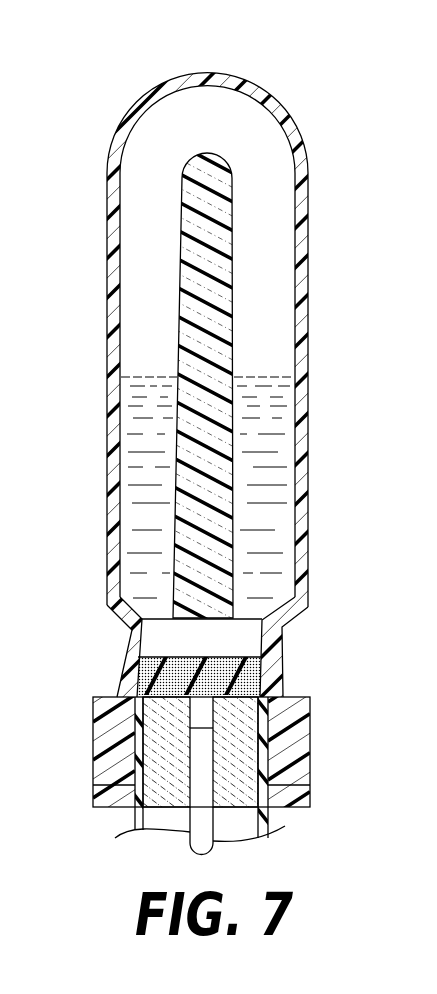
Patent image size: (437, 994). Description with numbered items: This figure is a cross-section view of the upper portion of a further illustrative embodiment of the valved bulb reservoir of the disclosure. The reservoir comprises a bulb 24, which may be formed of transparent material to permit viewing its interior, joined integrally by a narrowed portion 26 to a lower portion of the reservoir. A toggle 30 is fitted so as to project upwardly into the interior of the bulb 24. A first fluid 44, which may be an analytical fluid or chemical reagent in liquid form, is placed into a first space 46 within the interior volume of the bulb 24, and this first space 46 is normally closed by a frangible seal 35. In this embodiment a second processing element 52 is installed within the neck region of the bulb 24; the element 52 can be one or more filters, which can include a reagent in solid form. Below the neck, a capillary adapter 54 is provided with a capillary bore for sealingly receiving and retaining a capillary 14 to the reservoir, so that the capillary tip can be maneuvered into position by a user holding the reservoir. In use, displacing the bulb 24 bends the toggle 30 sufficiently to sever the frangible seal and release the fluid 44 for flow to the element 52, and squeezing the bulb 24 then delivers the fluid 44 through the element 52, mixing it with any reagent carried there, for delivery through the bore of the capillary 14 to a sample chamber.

The capillary 14 is at (207, 842).
The bulb 24 is at (300, 212).
The narrowed portion 26 is at (273, 633).
The toggle 30 is at (226, 304).
The frangible seal 35 is at (160, 620).
The first fluid 44 is at (280, 446).
The first space 46 is at (150, 213).
The second processing element 52 is at (252, 690).
The capillary adapter 54 is at (312, 799).